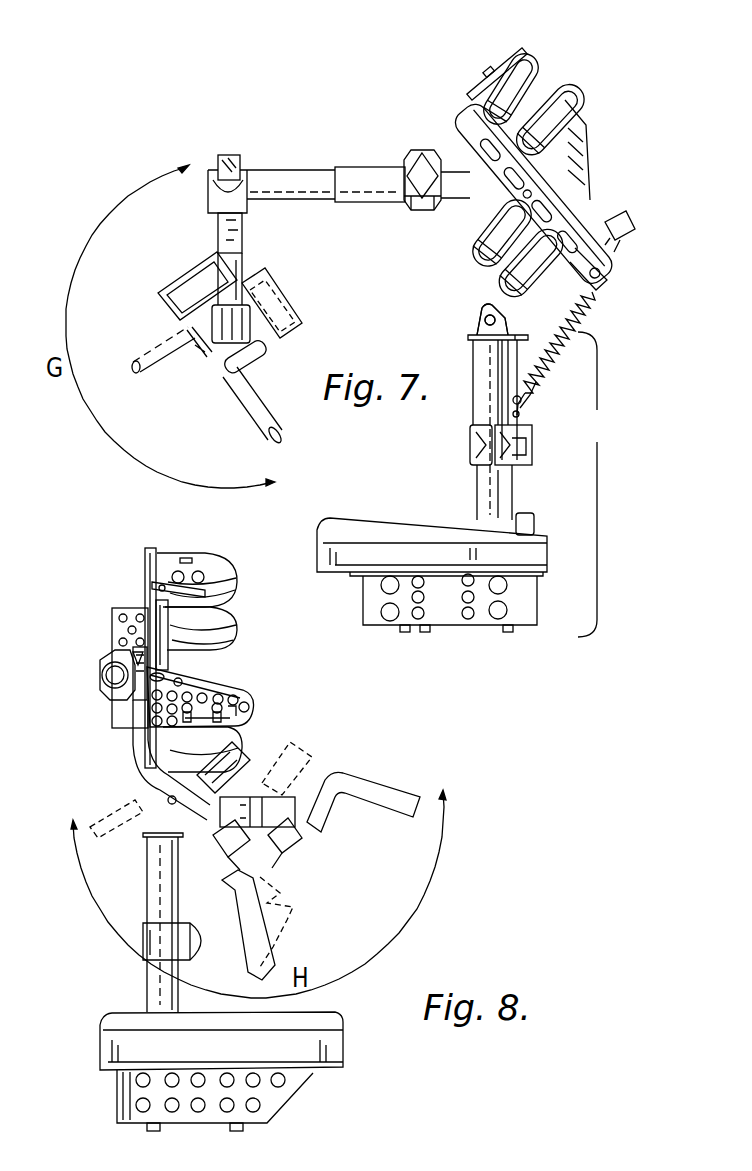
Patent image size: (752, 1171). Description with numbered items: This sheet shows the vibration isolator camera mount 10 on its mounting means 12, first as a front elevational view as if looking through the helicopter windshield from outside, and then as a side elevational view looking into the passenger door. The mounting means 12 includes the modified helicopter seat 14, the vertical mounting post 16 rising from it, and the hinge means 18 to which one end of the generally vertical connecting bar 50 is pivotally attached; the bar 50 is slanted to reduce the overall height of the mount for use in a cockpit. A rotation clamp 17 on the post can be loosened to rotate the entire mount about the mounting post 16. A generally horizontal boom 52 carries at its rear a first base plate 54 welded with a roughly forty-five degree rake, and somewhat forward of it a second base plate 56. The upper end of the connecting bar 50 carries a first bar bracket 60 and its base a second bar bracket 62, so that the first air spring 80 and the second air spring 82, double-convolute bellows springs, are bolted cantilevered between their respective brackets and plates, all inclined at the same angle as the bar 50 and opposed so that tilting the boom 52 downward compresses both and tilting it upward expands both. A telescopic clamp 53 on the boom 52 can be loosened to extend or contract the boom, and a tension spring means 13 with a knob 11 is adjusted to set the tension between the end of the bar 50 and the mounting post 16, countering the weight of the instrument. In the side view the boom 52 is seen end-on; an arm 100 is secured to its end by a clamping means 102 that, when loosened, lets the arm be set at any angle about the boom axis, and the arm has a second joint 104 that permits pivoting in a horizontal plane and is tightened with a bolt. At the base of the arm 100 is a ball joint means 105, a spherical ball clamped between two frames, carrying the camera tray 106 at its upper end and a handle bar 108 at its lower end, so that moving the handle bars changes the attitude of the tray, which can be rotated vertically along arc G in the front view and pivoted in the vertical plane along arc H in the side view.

In FIG. 7, the vibration isolator camera mount 10 is at (584, 60).
In FIG. 7, the knob 11 is at (624, 247).
In FIG. 7, the mounting means 12 is at (598, 484).
In FIG. 7, the tension spring means 13 is at (552, 352).
In FIG. 7, the modified helicopter seat 14 is at (360, 608).
In FIG. 7, the vertical mounting post 16 is at (478, 494).
In FIG. 7, the rotation clamp 17 is at (472, 442).
In FIG. 7, the hinge means 18 is at (473, 328).
In FIG. 7, the connecting bar 50 is at (585, 212).
In FIG. 8, the connecting bar 50 is at (147, 597).
In FIG. 7, the horizontal boom 52 is at (393, 168).
In FIG. 8, the horizontal boom 52 is at (103, 674).
In FIG. 7, the clamp 53 is at (430, 150).
In FIG. 7, the first base plate 54 is at (582, 158).
In FIG. 8, the first base plate 54 is at (110, 618).
In FIG. 7, the second base plate 56 is at (470, 215).
In FIG. 8, the second base plate 56 is at (253, 707).
In FIG. 7, the first bar bracket 60 is at (497, 80).
In FIG. 8, the first bar bracket 60 is at (183, 553).
In FIG. 7, the second bar bracket 62 is at (565, 280).
In FIG. 7, the first air spring 80 is at (572, 86).
In FIG. 8, the first air spring 80 is at (232, 632).
In FIG. 7, the second air spring 82 is at (473, 263).
In FIG. 8, the arm 100 is at (134, 757).
In FIG. 7, the clamping means 102 is at (213, 160).
In FIG. 8, the second joint 104 is at (130, 690).
In FIG. 8, the ball joint means 105 is at (277, 783).
In FIG. 8, the camera tray 106 is at (275, 765).
In FIG. 8, the handle bar 108 is at (373, 780).